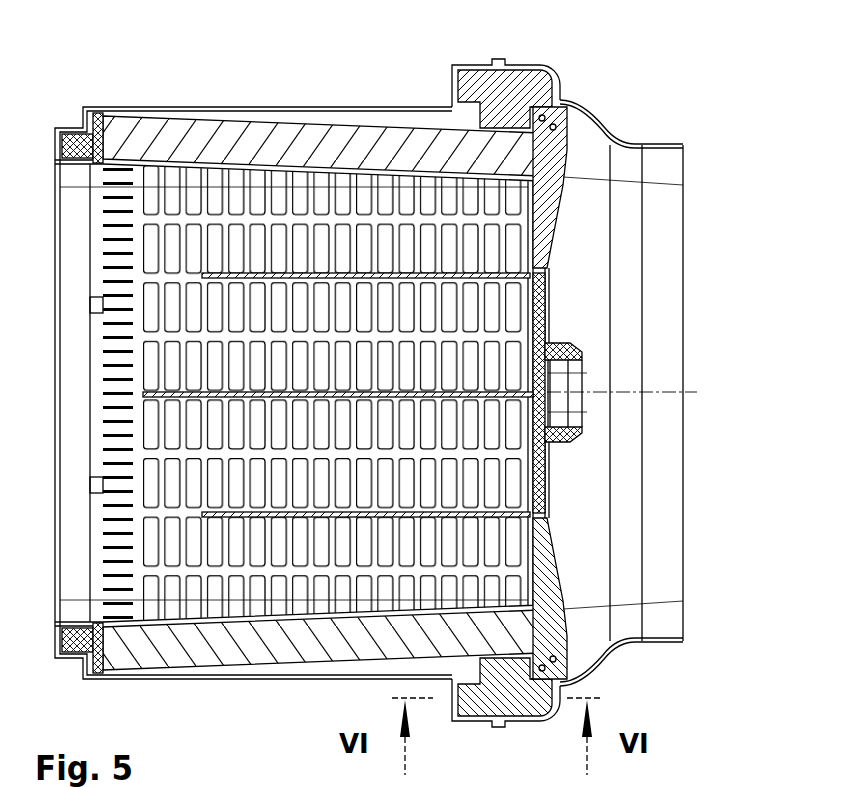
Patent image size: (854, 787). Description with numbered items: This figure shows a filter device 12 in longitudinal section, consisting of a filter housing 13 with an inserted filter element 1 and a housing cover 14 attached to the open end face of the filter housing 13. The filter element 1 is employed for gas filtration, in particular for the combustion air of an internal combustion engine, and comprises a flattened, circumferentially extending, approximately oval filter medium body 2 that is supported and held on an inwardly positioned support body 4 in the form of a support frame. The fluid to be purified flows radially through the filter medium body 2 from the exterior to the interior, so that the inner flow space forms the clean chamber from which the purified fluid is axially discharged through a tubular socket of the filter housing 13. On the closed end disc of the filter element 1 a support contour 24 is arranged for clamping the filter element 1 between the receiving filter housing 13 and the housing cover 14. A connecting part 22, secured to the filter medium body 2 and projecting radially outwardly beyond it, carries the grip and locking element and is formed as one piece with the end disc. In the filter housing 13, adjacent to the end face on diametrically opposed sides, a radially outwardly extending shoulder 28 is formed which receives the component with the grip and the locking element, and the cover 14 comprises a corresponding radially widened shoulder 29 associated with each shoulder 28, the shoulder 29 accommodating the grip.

The filter device 12 is at (183, 74).
The filter housing 13 is at (261, 106).
The filter element 1 is at (371, 120).
The filter medium body 2 is at (262, 652).
The support body 4 is at (205, 610).
The shoulder 28 is at (462, 65).
The shoulder 29 is at (523, 62).
The connecting part 22 is at (563, 160).
The housing cover 14 is at (615, 131).
The support contour 24 is at (572, 442).